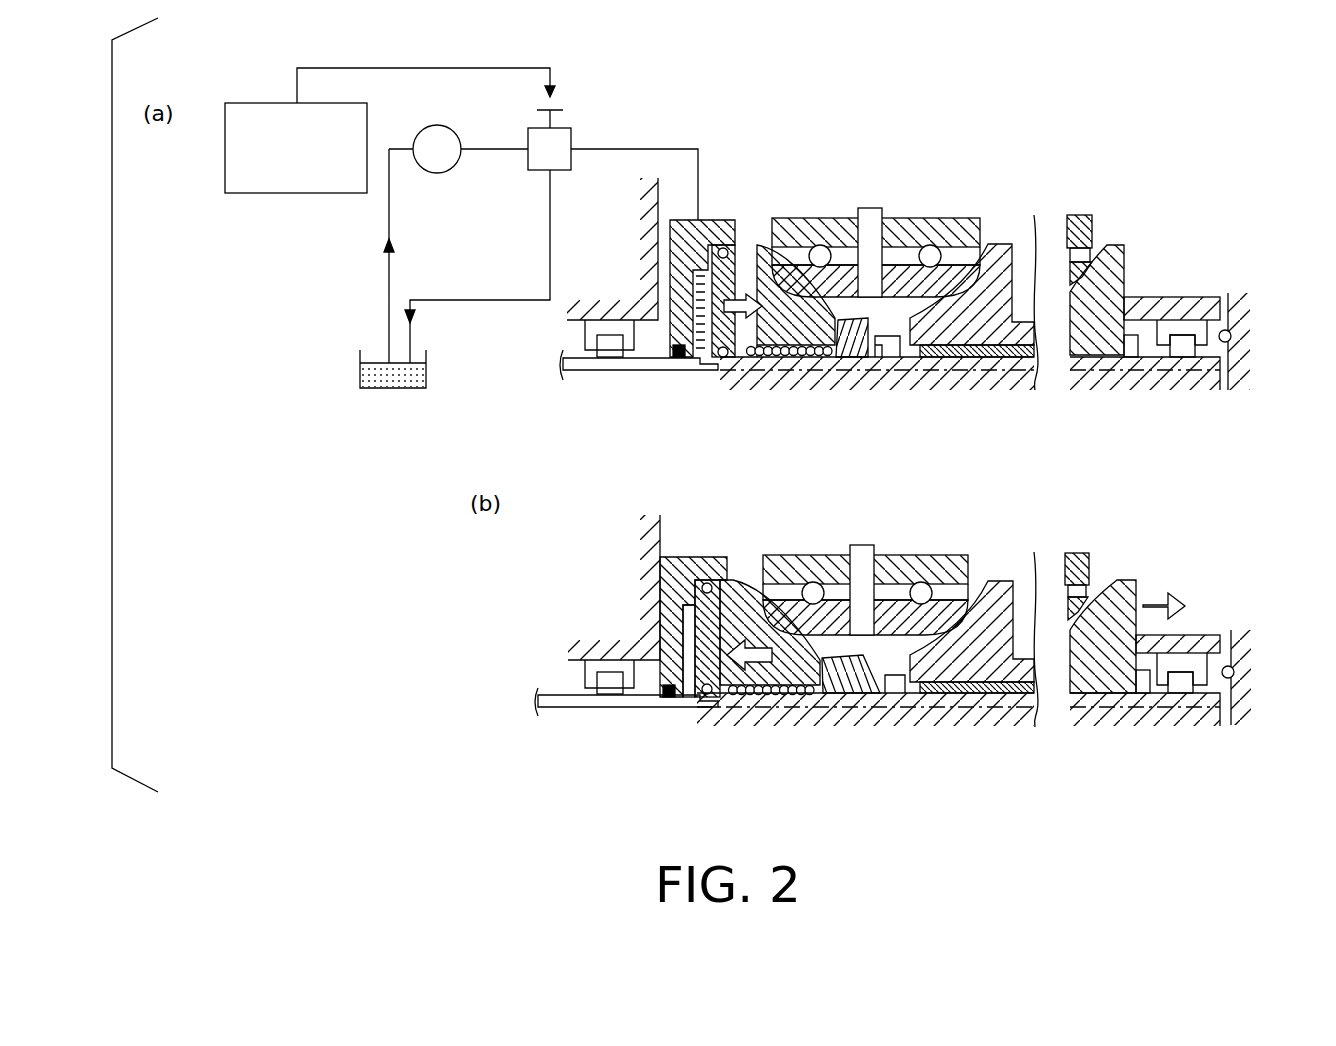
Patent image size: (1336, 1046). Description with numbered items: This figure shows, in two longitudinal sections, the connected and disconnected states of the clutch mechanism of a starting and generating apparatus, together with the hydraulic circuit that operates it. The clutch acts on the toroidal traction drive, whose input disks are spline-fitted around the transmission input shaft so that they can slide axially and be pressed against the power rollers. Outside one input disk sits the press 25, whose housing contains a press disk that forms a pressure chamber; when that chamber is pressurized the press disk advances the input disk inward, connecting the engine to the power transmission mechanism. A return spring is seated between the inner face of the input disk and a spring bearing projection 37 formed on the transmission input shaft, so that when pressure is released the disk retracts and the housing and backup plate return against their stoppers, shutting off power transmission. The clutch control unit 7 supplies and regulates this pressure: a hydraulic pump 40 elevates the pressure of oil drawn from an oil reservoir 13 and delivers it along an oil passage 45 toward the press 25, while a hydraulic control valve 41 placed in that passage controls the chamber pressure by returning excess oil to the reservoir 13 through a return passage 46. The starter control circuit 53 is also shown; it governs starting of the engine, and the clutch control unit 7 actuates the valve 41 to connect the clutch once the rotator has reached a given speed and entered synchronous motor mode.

The clutch control unit 7 is at (425, 224).
The oil reservoir 13 is at (372, 388).
The press 25 is at (700, 222).
The spring bearing projection 37 is at (885, 348).
The hydraulic pump 40 is at (437, 173).
The hydraulic control valve 41 is at (541, 170).
The oil passage 45 is at (495, 149).
The return passage 46 is at (427, 300).
The starter control circuit 53 is at (295, 193).